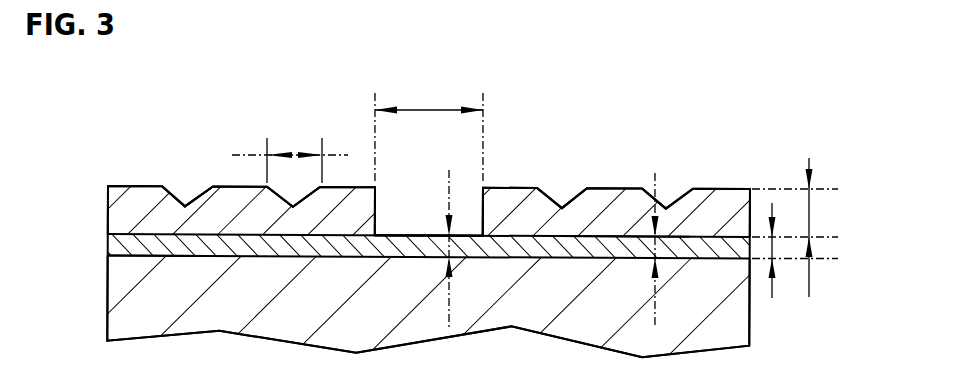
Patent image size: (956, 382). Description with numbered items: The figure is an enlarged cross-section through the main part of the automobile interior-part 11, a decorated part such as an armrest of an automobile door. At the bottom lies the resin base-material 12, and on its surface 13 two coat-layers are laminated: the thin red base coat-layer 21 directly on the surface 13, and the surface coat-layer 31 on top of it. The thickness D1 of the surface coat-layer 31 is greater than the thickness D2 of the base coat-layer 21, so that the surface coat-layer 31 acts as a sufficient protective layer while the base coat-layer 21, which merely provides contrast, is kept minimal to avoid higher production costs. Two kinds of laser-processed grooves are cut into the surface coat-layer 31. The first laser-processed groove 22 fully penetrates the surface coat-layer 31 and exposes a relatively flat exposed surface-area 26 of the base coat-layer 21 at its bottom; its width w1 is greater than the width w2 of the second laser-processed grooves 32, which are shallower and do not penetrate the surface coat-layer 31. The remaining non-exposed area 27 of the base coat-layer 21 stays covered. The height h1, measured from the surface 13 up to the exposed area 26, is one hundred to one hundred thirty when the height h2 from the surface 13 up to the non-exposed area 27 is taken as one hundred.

The automobile interior-part 11 is at (79, 160).
The resin base-material 12 is at (135, 303).
The surface of the resin base-material 13 is at (153, 243).
The base coat-layer 21 is at (120, 247).
The first laser-processed groove 22 is at (481, 208).
The exposed surface-area 26 is at (399, 225).
The non-exposed area 27 is at (614, 224).
The surface coat-layer 31 is at (122, 207).
The second laser-processed groove 32 is at (198, 190).
The width of the first laser-processed groove w1 is at (424, 110).
The width of the second laser-processed groove w2 is at (295, 153).
The height to the exposed area h1 is at (447, 247).
The height to the non-exposed area h2 is at (650, 250).
The thickness of the surface coat-layer D1 is at (812, 222).
The thickness of the base coat-layer D2 is at (773, 250).